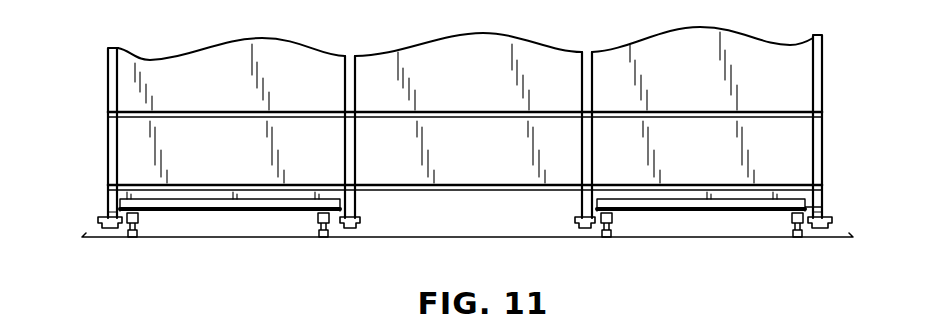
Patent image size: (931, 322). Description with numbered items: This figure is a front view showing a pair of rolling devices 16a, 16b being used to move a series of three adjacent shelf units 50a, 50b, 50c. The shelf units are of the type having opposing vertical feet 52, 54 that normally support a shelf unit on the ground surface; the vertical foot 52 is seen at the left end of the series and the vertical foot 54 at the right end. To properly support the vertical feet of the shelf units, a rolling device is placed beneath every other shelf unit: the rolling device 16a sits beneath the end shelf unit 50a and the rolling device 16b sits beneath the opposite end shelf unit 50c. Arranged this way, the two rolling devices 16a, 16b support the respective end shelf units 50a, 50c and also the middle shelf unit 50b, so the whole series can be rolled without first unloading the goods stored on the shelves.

The shelf unit 50a is at (286, 38).
The shelf unit 50b is at (530, 38).
The shelf unit 50c is at (745, 34).
The vertical foot 52 is at (108, 211).
The vertical foot 54 is at (822, 212).
The rolling device 16a is at (277, 212).
The rolling device 16b is at (725, 212).